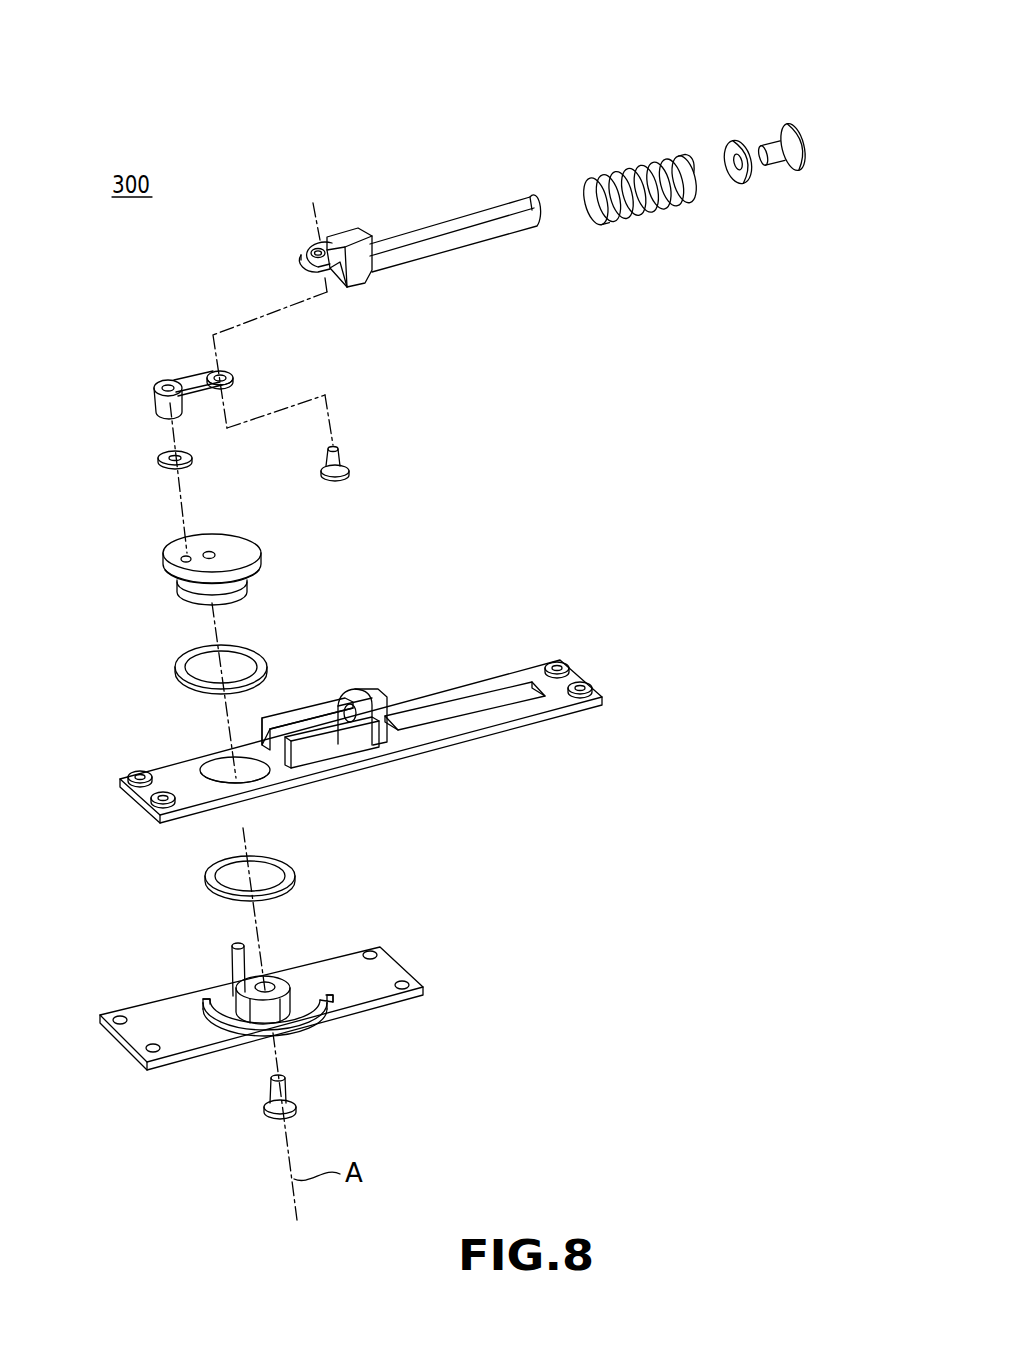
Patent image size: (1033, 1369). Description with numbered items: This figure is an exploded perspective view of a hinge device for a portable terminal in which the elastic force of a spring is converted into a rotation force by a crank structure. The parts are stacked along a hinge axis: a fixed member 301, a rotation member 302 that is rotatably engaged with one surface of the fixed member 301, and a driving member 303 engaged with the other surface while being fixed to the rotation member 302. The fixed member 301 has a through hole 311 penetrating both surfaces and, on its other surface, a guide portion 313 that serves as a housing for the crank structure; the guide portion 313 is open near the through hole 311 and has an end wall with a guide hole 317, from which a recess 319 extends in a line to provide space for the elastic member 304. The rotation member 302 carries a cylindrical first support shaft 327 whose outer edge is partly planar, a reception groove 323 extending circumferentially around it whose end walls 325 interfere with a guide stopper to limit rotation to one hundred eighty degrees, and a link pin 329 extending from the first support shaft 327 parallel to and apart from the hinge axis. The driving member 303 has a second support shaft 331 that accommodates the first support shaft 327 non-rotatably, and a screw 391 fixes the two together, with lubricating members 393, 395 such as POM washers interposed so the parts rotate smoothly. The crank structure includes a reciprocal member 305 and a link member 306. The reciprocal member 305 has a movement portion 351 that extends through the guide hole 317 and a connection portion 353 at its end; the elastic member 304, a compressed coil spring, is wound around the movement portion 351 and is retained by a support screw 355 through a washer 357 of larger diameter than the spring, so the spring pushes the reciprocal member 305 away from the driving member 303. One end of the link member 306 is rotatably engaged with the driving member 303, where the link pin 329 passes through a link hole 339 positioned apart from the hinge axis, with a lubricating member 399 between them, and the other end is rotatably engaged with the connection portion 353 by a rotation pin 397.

The fixed member 301 is at (607, 667).
The rotation member 302 is at (420, 959).
The driving member 303 is at (267, 544).
The elastic member 304 is at (624, 160).
The reciprocal member 305 is at (413, 279).
The link member 306 is at (160, 381).
The through hole 311 is at (215, 776).
The guide portion 313 is at (318, 706).
The guide hole 317 is at (352, 706).
The recess 319 is at (463, 708).
The reception groove 323 is at (315, 1016).
The walls 325 is at (272, 984).
The first support shaft 327 is at (240, 1003).
The link pin 329 is at (230, 948).
The second support shaft 331 is at (250, 585).
The link hole 339 is at (182, 558).
The movement portion 351 is at (440, 228).
The connection portion 353 is at (332, 238).
The support screw 355 is at (792, 122).
The washer 357 is at (728, 140).
The screw 391 is at (285, 1095).
The lubricating member 393 is at (292, 863).
The lubricating member 395 is at (178, 663).
The rotation pin 397 is at (350, 456).
The lubricating member 399 is at (160, 457).